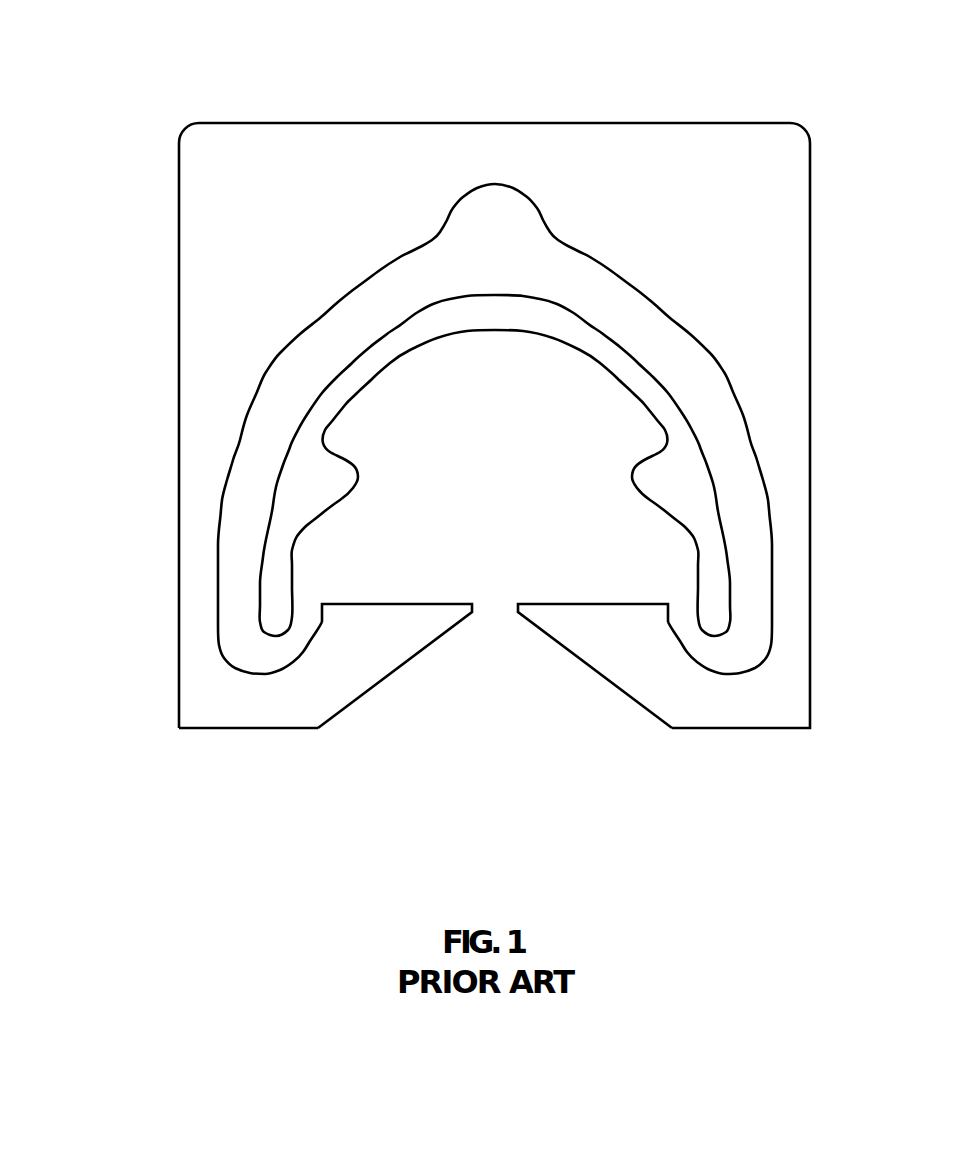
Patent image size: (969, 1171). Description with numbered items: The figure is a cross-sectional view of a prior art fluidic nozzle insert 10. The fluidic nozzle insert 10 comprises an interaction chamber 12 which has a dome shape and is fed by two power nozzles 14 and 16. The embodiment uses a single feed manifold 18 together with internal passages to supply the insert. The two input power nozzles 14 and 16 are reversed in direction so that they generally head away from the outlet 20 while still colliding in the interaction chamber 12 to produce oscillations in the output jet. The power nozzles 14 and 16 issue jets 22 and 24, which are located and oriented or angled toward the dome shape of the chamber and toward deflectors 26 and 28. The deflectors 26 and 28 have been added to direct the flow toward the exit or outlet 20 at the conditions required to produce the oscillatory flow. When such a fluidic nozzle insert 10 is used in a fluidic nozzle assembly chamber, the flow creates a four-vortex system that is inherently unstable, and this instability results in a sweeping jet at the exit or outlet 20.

The fluidic nozzle insert 10 is at (178, 43).
The interaction chamber 12 is at (495, 465).
The power nozzle 14 is at (297, 643).
The power nozzle 16 is at (682, 615).
The single feed manifold 18 is at (583, 287).
The outlet 20 is at (505, 600).
The jet 22 is at (308, 622).
The jet 24 is at (663, 595).
The deflector 26 is at (310, 487).
The deflector 28 is at (655, 487).